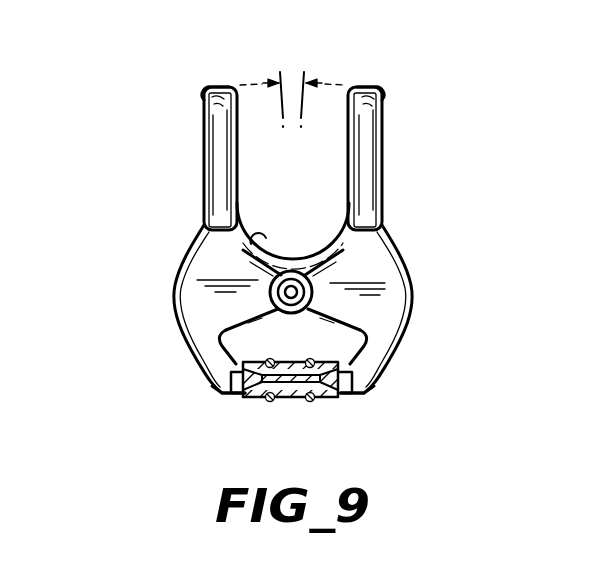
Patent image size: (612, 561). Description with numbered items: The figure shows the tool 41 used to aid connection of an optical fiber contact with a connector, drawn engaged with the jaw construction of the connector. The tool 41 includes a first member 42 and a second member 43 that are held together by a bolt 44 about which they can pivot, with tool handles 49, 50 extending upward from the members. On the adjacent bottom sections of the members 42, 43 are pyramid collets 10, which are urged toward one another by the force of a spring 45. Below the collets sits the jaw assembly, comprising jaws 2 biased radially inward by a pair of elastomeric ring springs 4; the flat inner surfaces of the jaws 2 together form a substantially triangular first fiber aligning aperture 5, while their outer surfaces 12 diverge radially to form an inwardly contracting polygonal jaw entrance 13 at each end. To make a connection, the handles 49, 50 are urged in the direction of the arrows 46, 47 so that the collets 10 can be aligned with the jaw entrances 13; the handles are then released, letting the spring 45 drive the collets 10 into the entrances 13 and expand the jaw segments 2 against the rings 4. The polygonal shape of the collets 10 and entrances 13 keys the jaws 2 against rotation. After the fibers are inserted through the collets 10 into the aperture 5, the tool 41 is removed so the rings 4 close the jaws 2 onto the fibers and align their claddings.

The tool 41 is at (292, 240).
The second member 43 is at (214, 145).
The first member 42 is at (366, 129).
The tool handle 50 is at (206, 88).
The tool handle 49 is at (375, 88).
The arrow 46 is at (263, 83).
The arrow 47 is at (322, 83).
The spring 45 is at (256, 240).
The bolt 44 is at (312, 297).
The pyramid collet 10 is at (249, 388).
The surface 12 is at (226, 392).
The jaw entrance 13 is at (363, 391).
The jaw 2 is at (292, 406).
The first fiber aligning aperture 5 is at (290, 385).
The elastomeric ring spring 4 is at (313, 401).